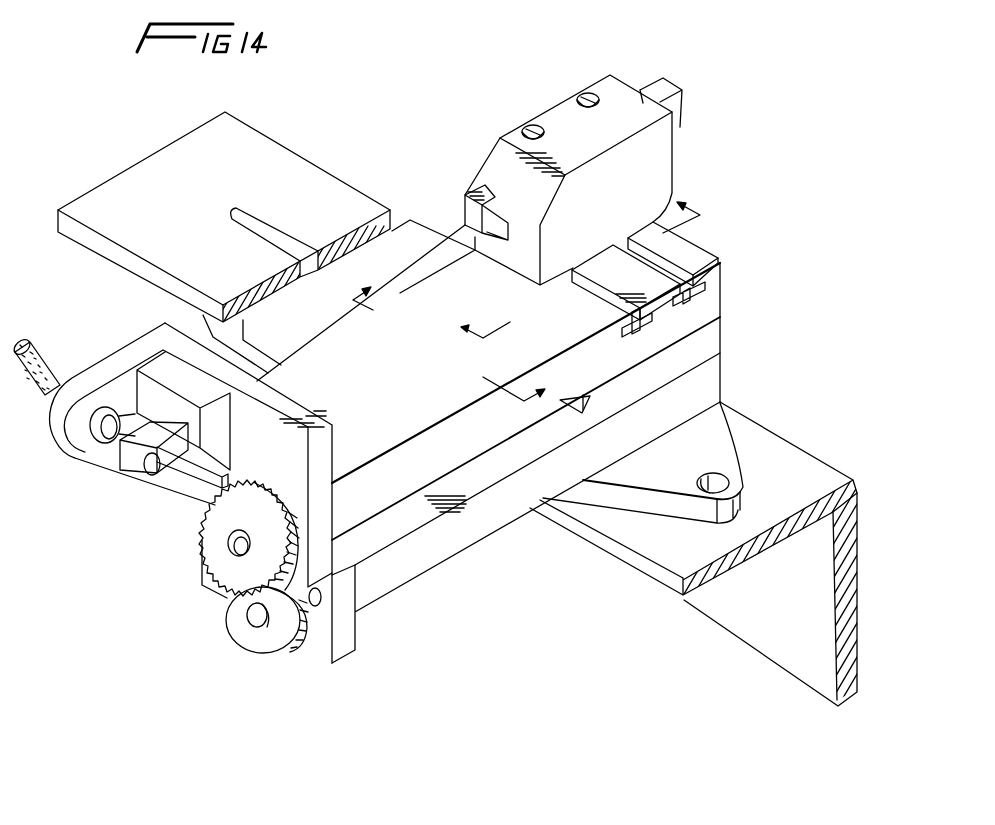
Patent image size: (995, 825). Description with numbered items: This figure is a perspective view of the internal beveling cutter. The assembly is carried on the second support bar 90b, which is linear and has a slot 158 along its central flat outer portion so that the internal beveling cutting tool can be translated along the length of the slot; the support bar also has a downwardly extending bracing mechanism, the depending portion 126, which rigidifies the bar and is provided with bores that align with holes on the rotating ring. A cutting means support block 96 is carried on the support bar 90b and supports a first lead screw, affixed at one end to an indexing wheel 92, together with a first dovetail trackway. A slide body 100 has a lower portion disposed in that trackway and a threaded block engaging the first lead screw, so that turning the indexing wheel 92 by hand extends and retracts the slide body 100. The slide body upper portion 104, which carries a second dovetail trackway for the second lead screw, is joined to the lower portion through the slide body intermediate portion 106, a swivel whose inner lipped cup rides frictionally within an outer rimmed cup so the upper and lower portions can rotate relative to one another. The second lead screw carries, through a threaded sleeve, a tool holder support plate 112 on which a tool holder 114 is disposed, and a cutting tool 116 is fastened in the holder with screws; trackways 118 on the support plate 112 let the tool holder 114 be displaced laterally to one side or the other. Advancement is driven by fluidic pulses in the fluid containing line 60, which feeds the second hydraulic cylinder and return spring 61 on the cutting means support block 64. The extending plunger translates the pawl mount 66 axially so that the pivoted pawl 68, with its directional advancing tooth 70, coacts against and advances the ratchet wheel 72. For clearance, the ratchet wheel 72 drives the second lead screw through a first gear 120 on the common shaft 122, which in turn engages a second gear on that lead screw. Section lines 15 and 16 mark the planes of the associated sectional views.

The section line 15- 15 is at (434, 357).
The section line 16- 16 is at (590, 280).
The fluid containing line 60 is at (48, 362).
The second hydraulic cylinder and return spring 61 is at (110, 437).
The cutting means support block 64 is at (134, 347).
The pawl mount 66 is at (123, 477).
The pawl 68 is at (167, 470).
The directional advancing tooth 70 is at (200, 483).
The ratchet wheel 72 is at (202, 547).
The second support bar 90b is at (812, 492).
The indexing wheel 92 is at (258, 635).
The cutting means support block 96 is at (583, 482).
The slide body 100 is at (447, 561).
The slide body upper portion 104 is at (713, 327).
The slide body intermediate portion 106 is at (730, 338).
The tool holder support plate 112 is at (407, 380).
The tool holder 114 is at (590, 146).
The cutting tool 116 is at (664, 88).
The trackways 118 is at (686, 306).
The first gear 120 is at (272, 506).
The common shaft 122 is at (236, 556).
The depending portion of the support bar 126 is at (802, 597).
The slot 158 is at (277, 233).